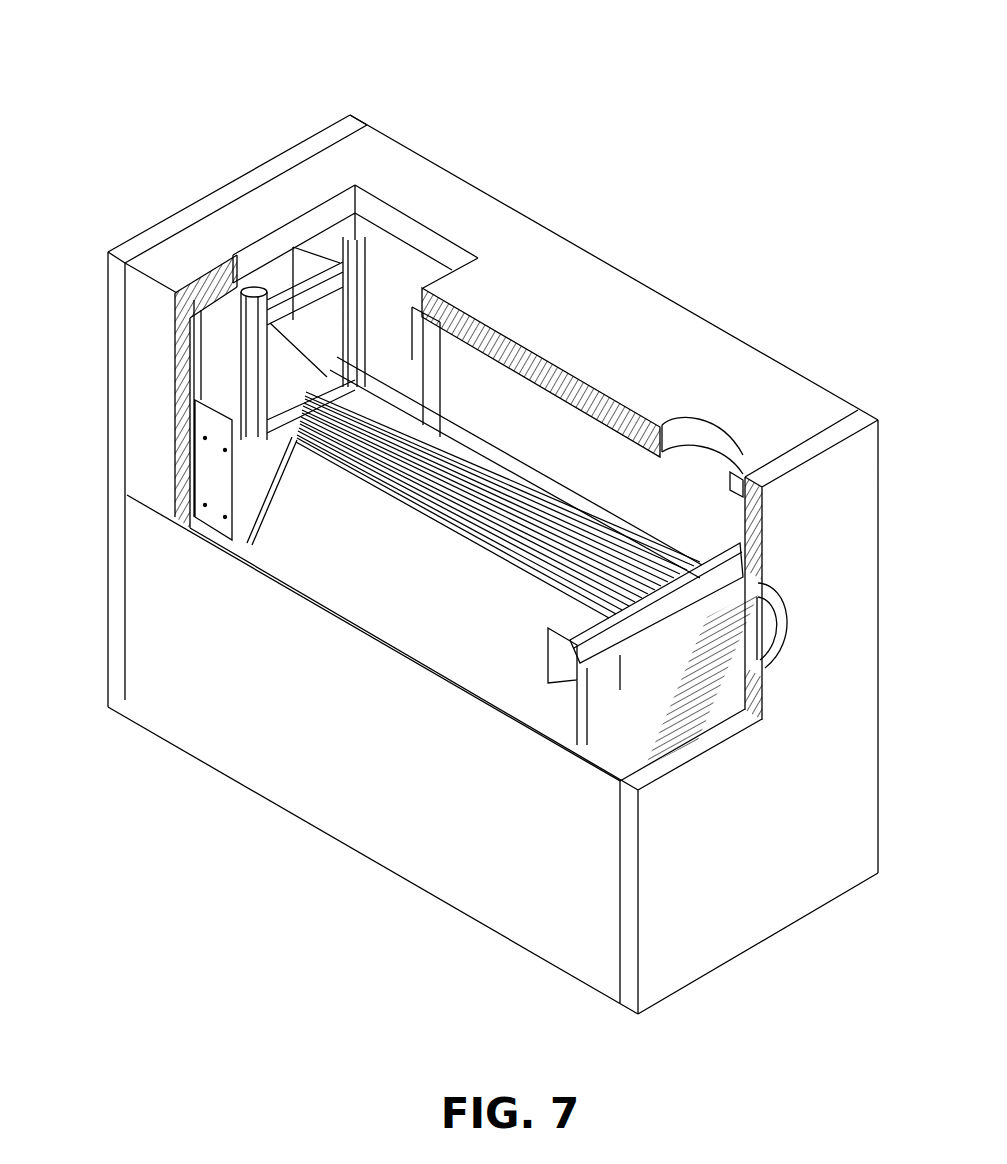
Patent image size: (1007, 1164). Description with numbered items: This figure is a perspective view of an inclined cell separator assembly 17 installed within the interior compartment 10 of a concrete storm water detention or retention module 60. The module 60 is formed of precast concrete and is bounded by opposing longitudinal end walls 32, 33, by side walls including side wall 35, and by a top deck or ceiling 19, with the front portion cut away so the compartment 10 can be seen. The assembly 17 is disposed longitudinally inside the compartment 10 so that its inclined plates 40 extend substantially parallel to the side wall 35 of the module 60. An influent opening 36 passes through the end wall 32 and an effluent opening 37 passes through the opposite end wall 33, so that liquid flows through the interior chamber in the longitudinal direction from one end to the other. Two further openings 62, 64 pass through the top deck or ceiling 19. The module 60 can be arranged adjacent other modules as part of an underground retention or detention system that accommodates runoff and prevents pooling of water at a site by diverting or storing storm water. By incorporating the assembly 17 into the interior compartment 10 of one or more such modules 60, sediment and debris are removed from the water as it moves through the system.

The concrete storm water detention or retention module 60 is at (769, 128).
The opening 62 is at (403, 263).
The top deck or ceiling 19 is at (512, 240).
The influent opening 36 is at (233, 297).
The opening 64 is at (703, 460).
The end wall 32 is at (108, 282).
The inclined plates 40 is at (297, 487).
The inclined cell separator assembly 17 is at (252, 513).
The side wall 35 is at (200, 748).
The interior compartment 10 is at (684, 515).
The effluent opening 37 is at (777, 627).
The end wall 33 is at (832, 868).